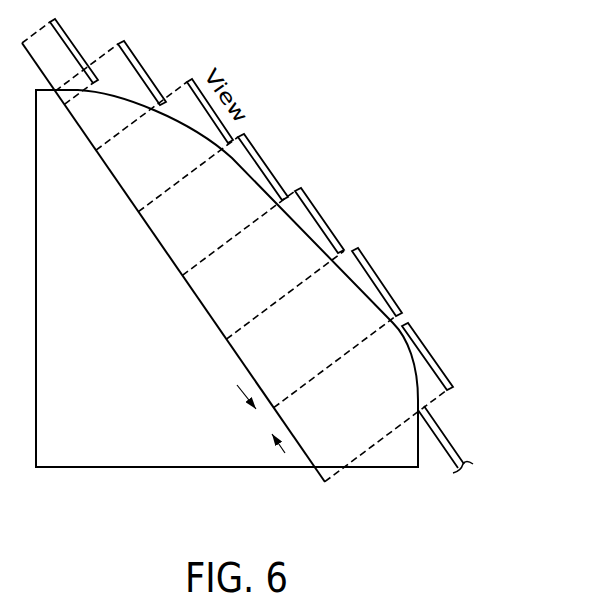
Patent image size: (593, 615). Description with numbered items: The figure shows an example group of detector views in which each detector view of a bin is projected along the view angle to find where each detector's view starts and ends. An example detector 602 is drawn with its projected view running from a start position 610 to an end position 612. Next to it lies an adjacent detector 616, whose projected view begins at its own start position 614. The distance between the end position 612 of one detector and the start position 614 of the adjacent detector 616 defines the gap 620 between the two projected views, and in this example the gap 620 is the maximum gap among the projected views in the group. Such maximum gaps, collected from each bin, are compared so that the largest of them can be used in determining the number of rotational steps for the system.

The start position 610 is at (369, 229).
The detector 602 is at (385, 275).
The end position 612 is at (418, 298).
The start position 614 is at (424, 310).
The adjacent detector 616 is at (433, 353).
The gap 620 is at (267, 414).